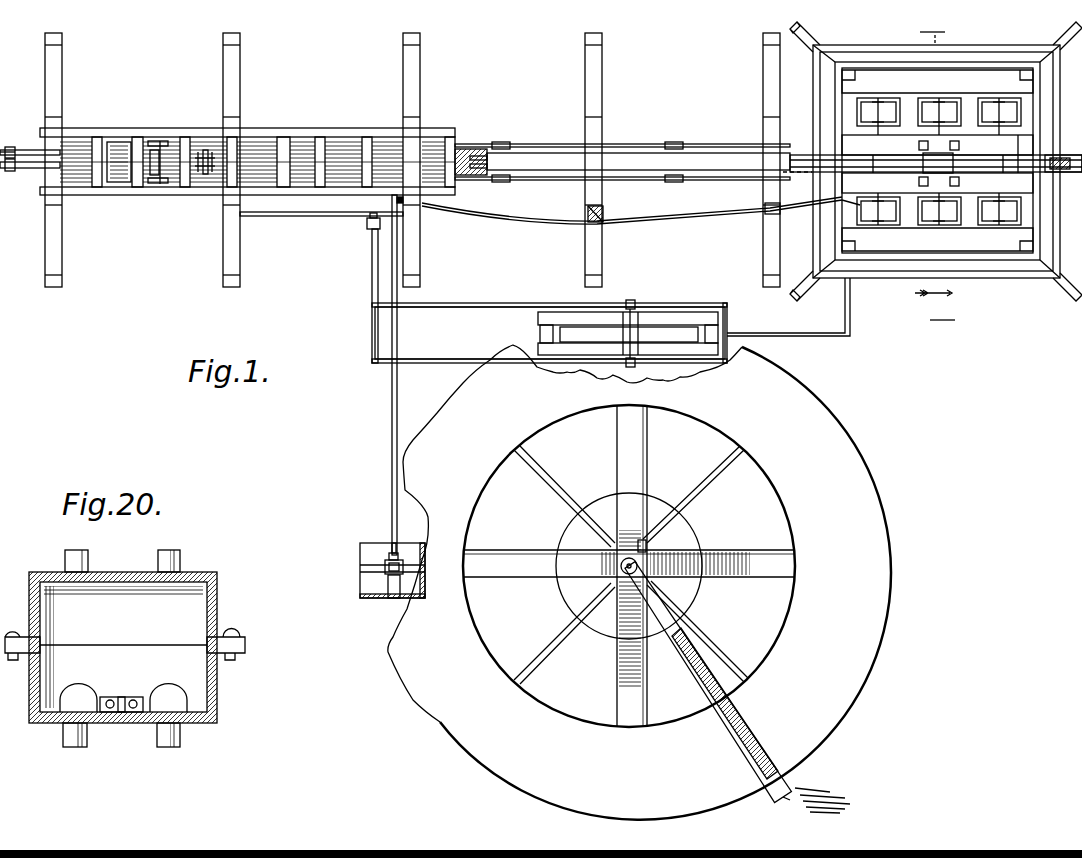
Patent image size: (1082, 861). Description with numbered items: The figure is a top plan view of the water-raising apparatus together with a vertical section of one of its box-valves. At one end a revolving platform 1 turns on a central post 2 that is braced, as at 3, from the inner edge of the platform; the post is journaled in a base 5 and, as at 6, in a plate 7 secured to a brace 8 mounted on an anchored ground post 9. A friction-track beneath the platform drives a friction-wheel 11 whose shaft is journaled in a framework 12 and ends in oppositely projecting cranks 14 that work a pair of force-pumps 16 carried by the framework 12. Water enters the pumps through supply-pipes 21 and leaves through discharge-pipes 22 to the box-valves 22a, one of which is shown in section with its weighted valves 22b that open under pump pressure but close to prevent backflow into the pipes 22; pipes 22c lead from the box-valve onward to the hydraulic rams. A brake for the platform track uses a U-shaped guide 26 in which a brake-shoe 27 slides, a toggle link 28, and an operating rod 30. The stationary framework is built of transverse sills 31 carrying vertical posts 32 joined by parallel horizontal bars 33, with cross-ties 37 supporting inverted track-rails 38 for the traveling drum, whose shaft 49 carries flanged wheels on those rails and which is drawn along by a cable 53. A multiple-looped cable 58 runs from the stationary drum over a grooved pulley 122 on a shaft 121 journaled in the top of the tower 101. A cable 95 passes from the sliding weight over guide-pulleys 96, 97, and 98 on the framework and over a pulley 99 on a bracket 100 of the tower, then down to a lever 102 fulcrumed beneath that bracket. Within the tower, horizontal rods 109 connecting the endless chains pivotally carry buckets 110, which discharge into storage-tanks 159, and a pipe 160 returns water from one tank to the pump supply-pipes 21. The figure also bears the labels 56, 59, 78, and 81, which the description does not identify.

In FIG. 1, the revolving platform 1 is at (875, 513).
In FIG. 1, the central post 2 is at (656, 609).
In FIG. 1, the braces 3 is at (629, 566).
In FIG. 1, the base 5 is at (565, 597).
In FIG. 1, the journal 6 is at (645, 548).
In FIG. 1, the plate 7 is at (735, 685).
In FIG. 1, the brace 8 is at (700, 675).
In FIG. 1, the post 9 is at (775, 792).
In FIG. 1, the friction-wheel 11 is at (560, 334).
In FIG. 1, the framework 12 is at (611, 322).
In FIG. 1, the cranks 14 is at (640, 312).
In FIG. 1, the force-pumps 16 is at (631, 300).
In FIG. 1, the supply-pipes 21 is at (688, 306).
In FIG. 1, the discharge-pipes 22 is at (490, 304).
In FIG. 20, the discharge-pipes 22 is at (157, 745).
In FIG. 1, the box-valves 22a is at (366, 226).
In FIG. 20, the box-valves 22a is at (125, 656).
In FIG. 20, the weighted valves 22b is at (160, 695).
In FIG. 1, the pipes 22c is at (300, 218).
In FIG. 20, the pipes 22c is at (158, 558).
In FIG. 1, the U-shaped guide 26 is at (370, 564).
In FIG. 1, the brake-shoe 27 is at (385, 565).
In FIG. 1, the link 28 is at (389, 556).
In FIG. 1, the rod 30 is at (369, 373).
In FIG. 1, the transverse sills 31 is at (391, 154).
In FIG. 1, the vertical posts 32 is at (45, 188).
In FIG. 1, the horizontal bars 33 is at (45, 245).
In FIG. 1, the cross-ties 37 is at (247, 158).
In FIG. 1, the inverted track-rails 38 is at (124, 140).
In FIG. 1, the shaft 49 is at (166, 142).
In FIG. 1, the cable 53 is at (40, 163).
In FIG. 1, the pipe stub 56 is at (60, 150).
In FIG. 1, the multiple-looped cable 58 is at (768, 160).
In FIG. 1, the coupling 59 is at (470, 156).
In FIG. 1, the panel 78 is at (303, 178).
In FIG. 1, the coupling part 81 is at (486, 172).
In FIG. 1, the cable 95 is at (632, 219).
In FIG. 1, the guide-pulley 96 is at (392, 200).
In FIG. 1, the guide-pulley 97 is at (603, 213).
In FIG. 1, the guide-pulley 98 is at (768, 214).
In FIG. 1, the pulley 99 is at (1060, 160).
In FIG. 1, the bracket 100 is at (1070, 182).
In FIG. 1, the tower 101 is at (936, 169).
In FIG. 1, the lever 102 is at (1018, 166).
In FIG. 1, the horizontal rods 109 is at (997, 108).
In FIG. 1, the buckets 110 is at (872, 108).
In FIG. 1, the shaft 121 is at (950, 156).
In FIG. 1, the grooved pulley 122 is at (880, 150).
In FIG. 1, the storage-tanks 159 is at (927, 106).
In FIG. 1, the pipe 160 is at (852, 336).